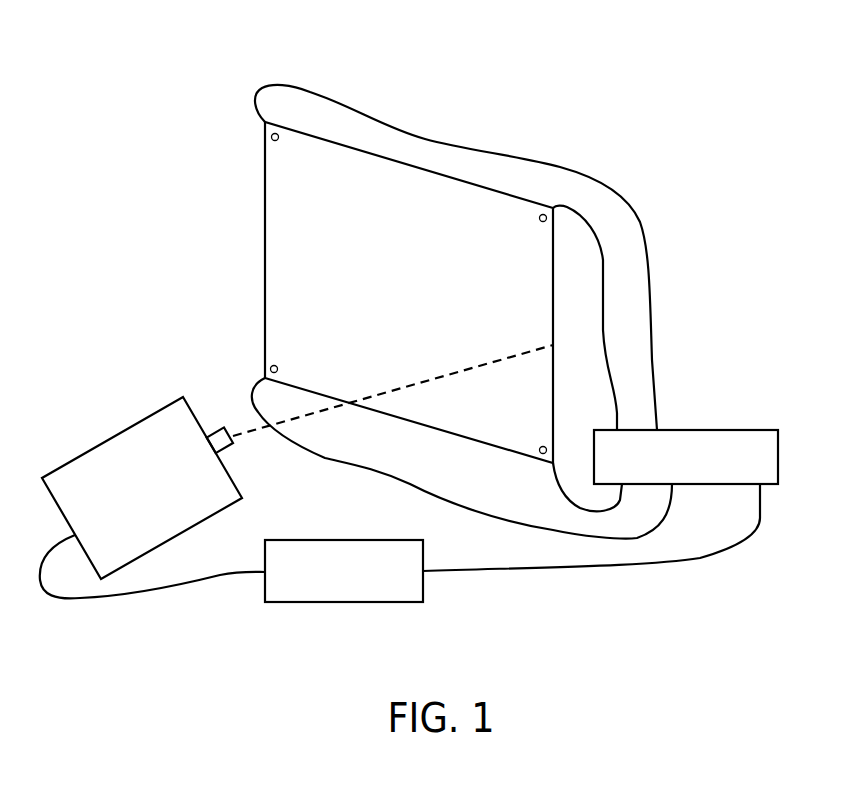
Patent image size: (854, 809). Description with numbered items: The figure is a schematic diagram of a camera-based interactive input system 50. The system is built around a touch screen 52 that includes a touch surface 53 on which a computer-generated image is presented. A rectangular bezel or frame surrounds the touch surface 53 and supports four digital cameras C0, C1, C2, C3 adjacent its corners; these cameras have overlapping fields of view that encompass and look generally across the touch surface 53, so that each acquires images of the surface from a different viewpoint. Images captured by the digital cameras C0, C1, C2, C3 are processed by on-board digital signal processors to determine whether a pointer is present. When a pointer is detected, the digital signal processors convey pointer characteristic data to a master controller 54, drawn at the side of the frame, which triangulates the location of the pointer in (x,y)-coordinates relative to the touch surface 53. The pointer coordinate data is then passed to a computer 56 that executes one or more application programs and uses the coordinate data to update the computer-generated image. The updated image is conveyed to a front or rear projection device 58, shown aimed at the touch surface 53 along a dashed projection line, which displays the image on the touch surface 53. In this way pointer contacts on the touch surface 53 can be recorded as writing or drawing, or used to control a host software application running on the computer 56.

The interactive input system 50 is at (652, 152).
The touch screen 52 is at (507, 190).
The touch surface 53 is at (291, 255).
The master controller 54 is at (722, 430).
The computer 56 is at (375, 603).
The projection device 58 is at (120, 450).
The digital camera C0 is at (289, 361).
The digital camera C1 is at (287, 148).
The digital camera C2 is at (528, 224).
The digital camera C3 is at (528, 441).